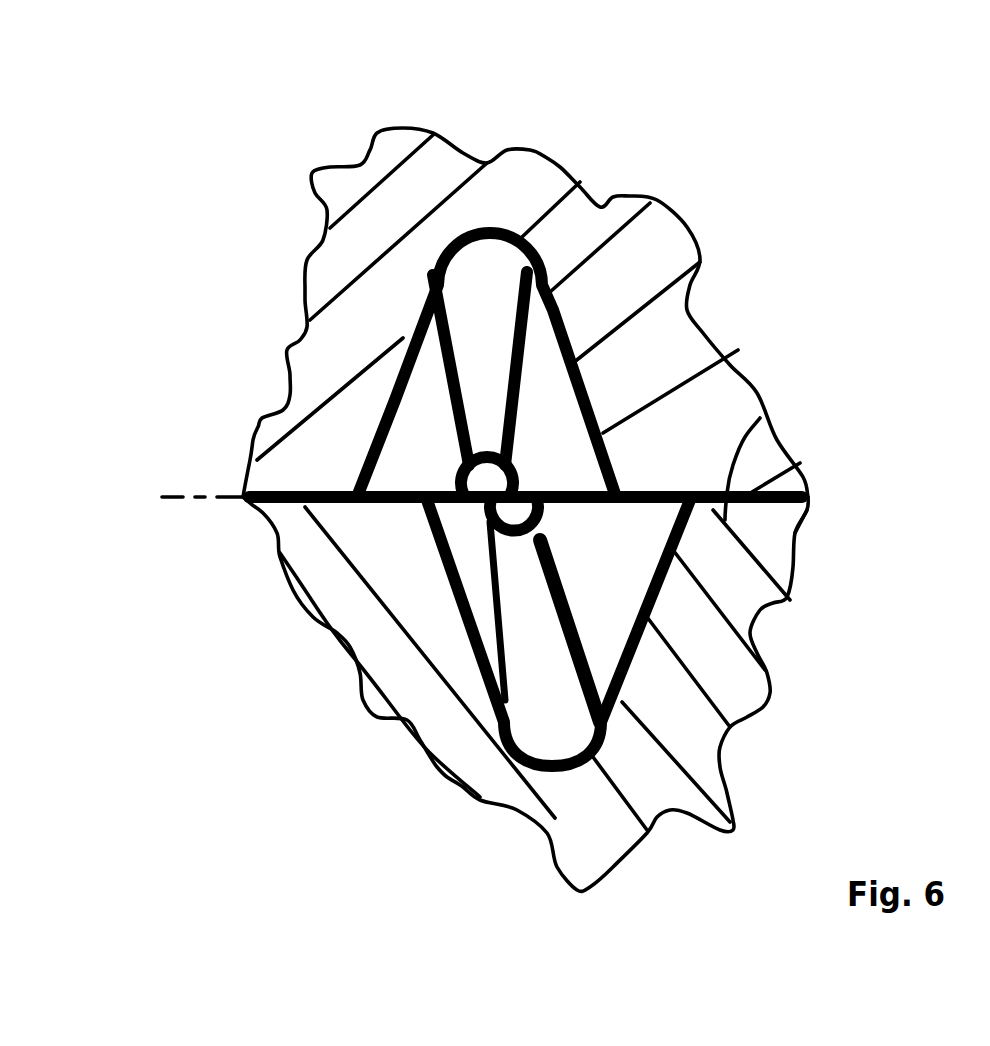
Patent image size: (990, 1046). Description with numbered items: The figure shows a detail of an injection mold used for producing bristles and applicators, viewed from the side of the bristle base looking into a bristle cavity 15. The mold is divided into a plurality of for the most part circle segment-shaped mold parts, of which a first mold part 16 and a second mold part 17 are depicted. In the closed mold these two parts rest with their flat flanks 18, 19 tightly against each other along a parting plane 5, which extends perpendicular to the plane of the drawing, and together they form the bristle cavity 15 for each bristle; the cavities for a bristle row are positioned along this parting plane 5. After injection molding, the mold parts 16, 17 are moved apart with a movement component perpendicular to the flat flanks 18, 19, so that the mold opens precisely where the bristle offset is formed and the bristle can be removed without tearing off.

The parting plane 5 is at (187, 494).
The bristle cavity 15 is at (556, 432).
The first mold part 16 is at (640, 173).
The second mold part 17 is at (347, 757).
The flat flank 18 is at (645, 495).
The flat flank 19 is at (786, 524).